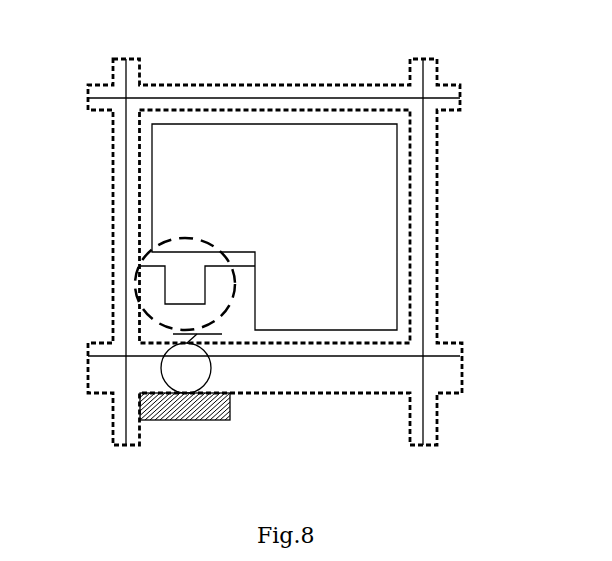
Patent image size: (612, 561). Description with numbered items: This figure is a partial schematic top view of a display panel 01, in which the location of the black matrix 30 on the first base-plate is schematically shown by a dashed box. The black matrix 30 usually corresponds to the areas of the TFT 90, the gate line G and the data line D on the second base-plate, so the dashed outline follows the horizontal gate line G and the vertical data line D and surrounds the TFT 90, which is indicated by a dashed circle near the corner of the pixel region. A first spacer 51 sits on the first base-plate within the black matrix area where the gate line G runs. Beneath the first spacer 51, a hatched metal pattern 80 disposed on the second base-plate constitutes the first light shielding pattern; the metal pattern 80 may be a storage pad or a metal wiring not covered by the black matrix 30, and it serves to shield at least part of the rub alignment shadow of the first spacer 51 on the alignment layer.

The display panel 01 is at (110, 43).
The gate line G is at (300, 98).
The data line D is at (423, 213).
The black matrix 30 is at (437, 418).
The TFT 90 is at (136, 278).
The first spacer 51 is at (183, 362).
The metal pattern 80 is at (205, 408).